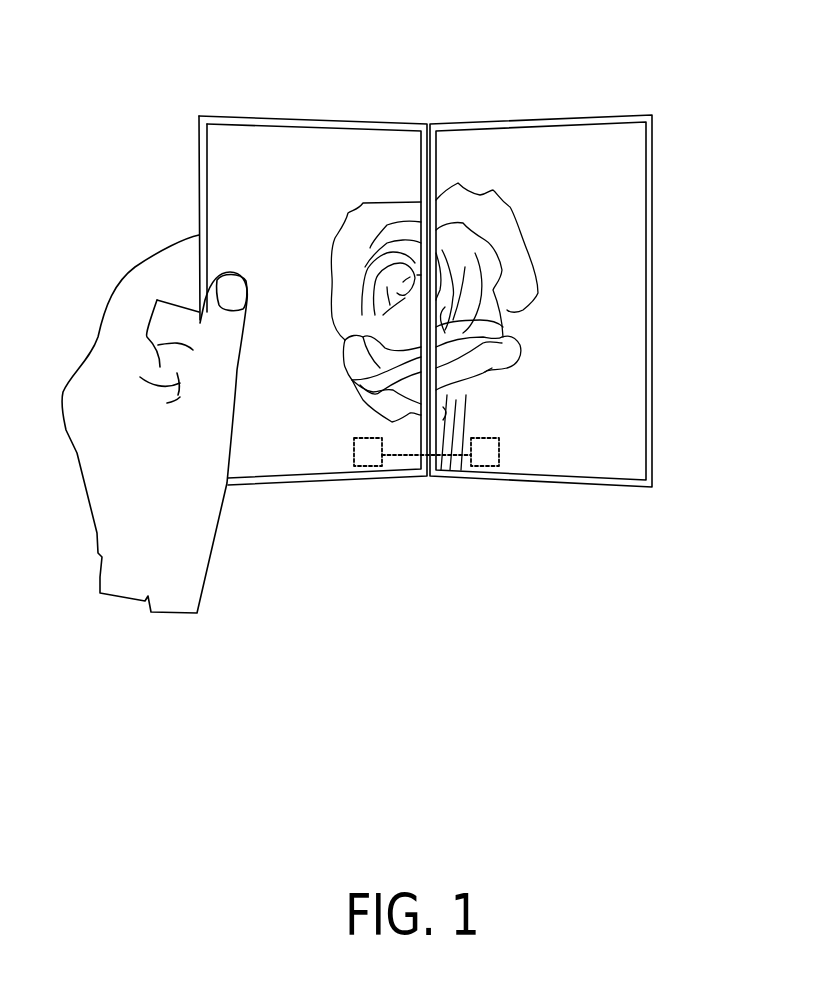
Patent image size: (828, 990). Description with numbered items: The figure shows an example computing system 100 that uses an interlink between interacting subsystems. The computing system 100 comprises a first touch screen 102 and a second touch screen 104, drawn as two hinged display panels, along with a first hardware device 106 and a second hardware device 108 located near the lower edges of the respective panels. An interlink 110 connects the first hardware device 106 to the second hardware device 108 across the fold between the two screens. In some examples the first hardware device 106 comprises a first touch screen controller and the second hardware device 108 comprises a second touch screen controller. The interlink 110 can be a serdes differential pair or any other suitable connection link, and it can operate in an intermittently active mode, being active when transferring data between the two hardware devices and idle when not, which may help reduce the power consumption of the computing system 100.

The computing system 100 is at (427, 273).
The first touch screen 102 is at (598, 115).
The second touch screen 104 is at (258, 115).
The first hardware device 106 is at (500, 463).
The second hardware device 108 is at (354, 461).
The interlink 110 is at (388, 457).